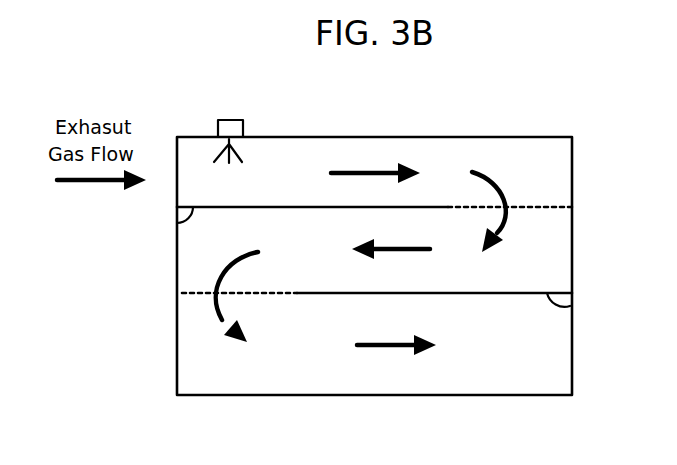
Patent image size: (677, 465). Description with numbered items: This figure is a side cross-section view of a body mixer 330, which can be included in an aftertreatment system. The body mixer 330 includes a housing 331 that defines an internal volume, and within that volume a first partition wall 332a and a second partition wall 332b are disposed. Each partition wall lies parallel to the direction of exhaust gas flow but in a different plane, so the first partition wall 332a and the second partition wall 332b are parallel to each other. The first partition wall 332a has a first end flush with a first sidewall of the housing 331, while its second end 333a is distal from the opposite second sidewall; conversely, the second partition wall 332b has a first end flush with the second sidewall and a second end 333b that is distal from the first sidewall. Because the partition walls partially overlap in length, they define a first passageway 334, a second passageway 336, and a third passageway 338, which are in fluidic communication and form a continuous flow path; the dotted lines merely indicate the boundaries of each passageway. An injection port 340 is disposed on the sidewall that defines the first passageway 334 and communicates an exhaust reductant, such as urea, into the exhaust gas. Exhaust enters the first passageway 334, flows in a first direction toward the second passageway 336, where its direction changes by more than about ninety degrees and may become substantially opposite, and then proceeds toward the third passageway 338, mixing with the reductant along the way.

The body mixer 330 is at (388, 258).
The housing 331 is at (572, 378).
The first partition wall 332a is at (177, 222).
The second partition wall 332b is at (572, 300).
The second end of the first partition wall 333a is at (448, 207).
The second end of the second partition wall 333b is at (297, 293).
The first passageway 334 is at (272, 155).
The second passageway 336 is at (552, 263).
The third passageway 338 is at (343, 382).
The injection port 340 is at (228, 120).